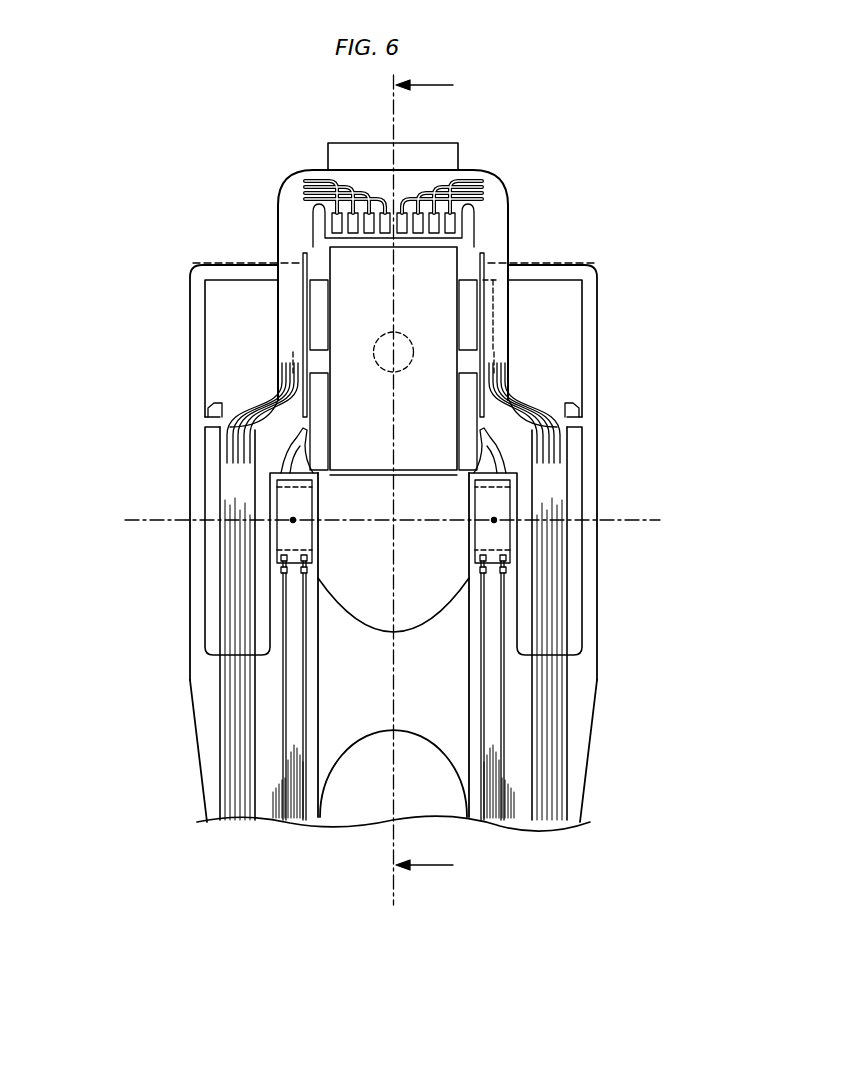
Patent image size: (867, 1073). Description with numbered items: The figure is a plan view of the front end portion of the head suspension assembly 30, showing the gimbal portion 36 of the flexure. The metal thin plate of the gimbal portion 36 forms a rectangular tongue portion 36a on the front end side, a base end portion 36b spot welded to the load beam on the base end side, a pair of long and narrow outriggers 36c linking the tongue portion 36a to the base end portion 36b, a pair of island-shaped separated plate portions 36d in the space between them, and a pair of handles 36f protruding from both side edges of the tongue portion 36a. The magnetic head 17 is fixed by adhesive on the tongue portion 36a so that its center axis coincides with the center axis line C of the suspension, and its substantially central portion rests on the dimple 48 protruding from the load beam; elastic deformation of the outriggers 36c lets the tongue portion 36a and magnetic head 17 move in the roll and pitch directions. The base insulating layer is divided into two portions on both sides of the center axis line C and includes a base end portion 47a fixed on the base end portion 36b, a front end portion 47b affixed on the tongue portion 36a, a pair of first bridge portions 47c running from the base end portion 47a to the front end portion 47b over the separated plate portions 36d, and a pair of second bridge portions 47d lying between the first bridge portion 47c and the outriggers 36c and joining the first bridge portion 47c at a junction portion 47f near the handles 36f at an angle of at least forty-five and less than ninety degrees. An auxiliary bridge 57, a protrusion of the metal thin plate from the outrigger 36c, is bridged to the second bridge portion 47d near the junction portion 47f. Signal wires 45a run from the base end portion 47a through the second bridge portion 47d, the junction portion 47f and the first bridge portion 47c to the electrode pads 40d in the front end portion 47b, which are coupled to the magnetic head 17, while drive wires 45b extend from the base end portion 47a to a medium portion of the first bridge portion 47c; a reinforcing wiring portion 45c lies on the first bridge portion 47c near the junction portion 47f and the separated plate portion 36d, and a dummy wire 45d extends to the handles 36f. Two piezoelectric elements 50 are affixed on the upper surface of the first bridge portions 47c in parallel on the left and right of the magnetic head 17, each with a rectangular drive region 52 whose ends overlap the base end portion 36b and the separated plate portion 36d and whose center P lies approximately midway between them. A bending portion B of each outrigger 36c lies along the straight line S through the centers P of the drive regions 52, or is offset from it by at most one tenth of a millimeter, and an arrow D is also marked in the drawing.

The magnetic head 17 is at (347, 330).
The sensor unit 30 is at (176, 757).
The gimbal portion 36 is at (172, 493).
The tongue portion 36a is at (480, 263).
The base end portion 36b is at (448, 648).
The outriggers 36c is at (191, 322).
The separated plate portions 36d is at (233, 457).
The handles 36f is at (293, 352).
The electrode pads 40d is at (370, 220).
The signal wires 45a is at (240, 737).
The drive wires 45b is at (283, 800).
The reinforcing wiring portion 45c is at (294, 458).
The dummy wire 45d is at (298, 255).
The base end portion 47a is at (300, 670).
The front end portion 47b is at (362, 195).
The first bridge portion 47c is at (292, 318).
The second bridge portion 47d is at (235, 580).
The junction portion 47f is at (283, 392).
The dimple 48 is at (381, 374).
The piezoelectric elements 50 is at (293, 498).
The drive region 52 is at (333, 533).
The auxiliary bridge 57 is at (217, 408).
The bending portion B is at (190, 520).
The center axis line C is at (395, 895).
The direction D is at (322, 620).
The center P is at (296, 523).
The straight line S is at (615, 524).